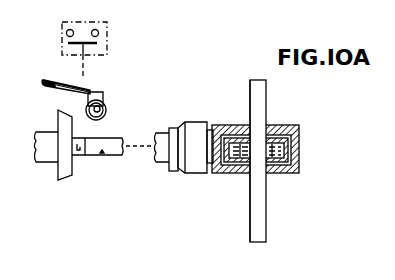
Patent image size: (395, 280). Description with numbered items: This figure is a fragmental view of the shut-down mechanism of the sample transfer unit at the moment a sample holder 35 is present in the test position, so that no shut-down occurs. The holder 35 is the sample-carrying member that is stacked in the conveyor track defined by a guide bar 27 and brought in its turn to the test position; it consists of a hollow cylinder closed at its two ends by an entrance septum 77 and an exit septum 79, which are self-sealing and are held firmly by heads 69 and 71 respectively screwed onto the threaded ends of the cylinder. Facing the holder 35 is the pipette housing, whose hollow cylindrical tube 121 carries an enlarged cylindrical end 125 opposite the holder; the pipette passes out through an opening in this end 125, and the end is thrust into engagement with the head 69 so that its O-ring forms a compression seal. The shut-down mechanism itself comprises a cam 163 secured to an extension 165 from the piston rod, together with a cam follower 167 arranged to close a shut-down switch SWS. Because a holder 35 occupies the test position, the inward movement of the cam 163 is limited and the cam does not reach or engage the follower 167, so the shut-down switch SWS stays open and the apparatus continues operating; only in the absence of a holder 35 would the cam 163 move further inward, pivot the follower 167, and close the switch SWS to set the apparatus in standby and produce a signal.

The shut-down switch SWS is at (103, 50).
The cam follower 167 is at (104, 96).
The cam 163 is at (57, 176).
The extension 165 is at (103, 156).
The hollow cylindrical tube 121 is at (163, 132).
The enlarged cylindrical end 125 is at (188, 125).
The entrance septum 77 is at (210, 148).
The head 69 is at (237, 173).
The head 71 is at (296, 174).
The exit septum 79 is at (300, 150).
The guide bar 27 is at (251, 219).
The sample holder 35 is at (303, 114).